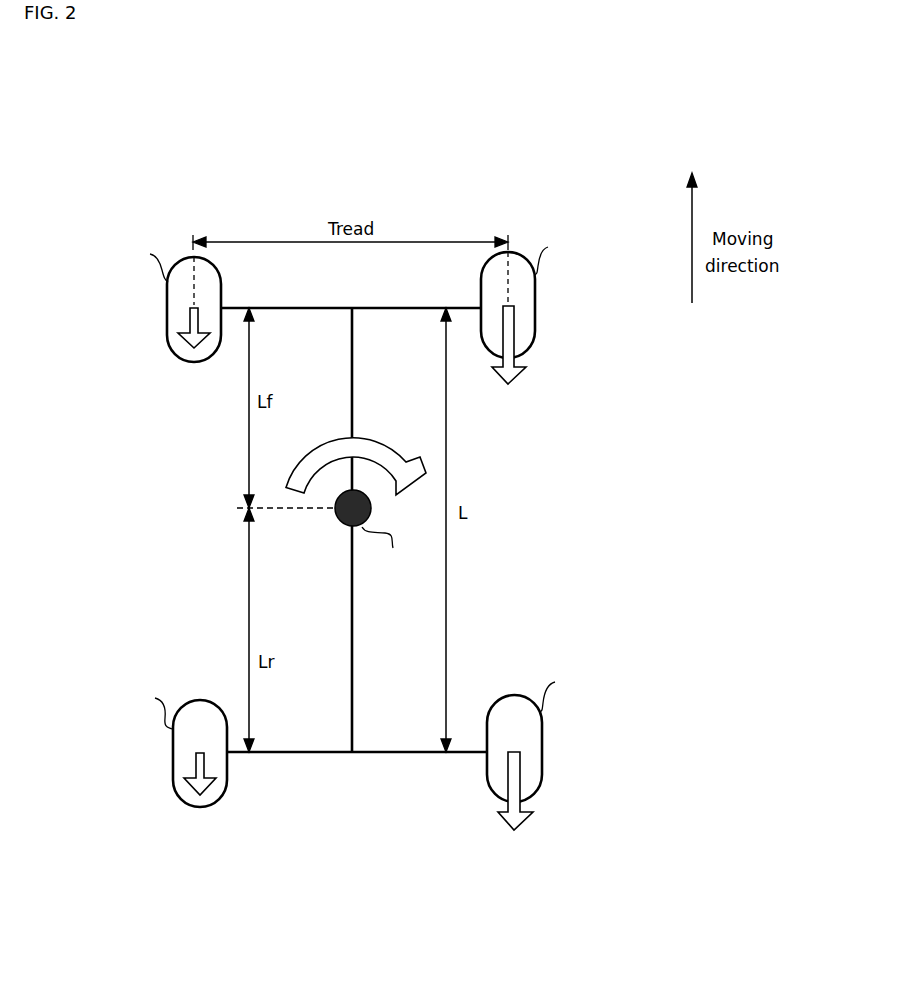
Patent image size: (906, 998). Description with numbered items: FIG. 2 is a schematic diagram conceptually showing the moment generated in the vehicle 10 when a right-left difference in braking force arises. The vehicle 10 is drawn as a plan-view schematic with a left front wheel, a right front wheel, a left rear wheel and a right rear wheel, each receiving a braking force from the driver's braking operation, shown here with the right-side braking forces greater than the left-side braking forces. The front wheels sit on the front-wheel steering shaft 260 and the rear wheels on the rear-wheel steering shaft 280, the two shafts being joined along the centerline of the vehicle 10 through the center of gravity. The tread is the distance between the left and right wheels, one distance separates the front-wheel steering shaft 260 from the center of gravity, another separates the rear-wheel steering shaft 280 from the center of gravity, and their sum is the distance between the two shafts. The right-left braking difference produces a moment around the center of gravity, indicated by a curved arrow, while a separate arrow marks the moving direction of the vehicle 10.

The vehicle 10 is at (137, 175).
The front-wheel steering shaft 260 is at (302, 308).
The rear-wheel steering shaft 280 is at (407, 755).